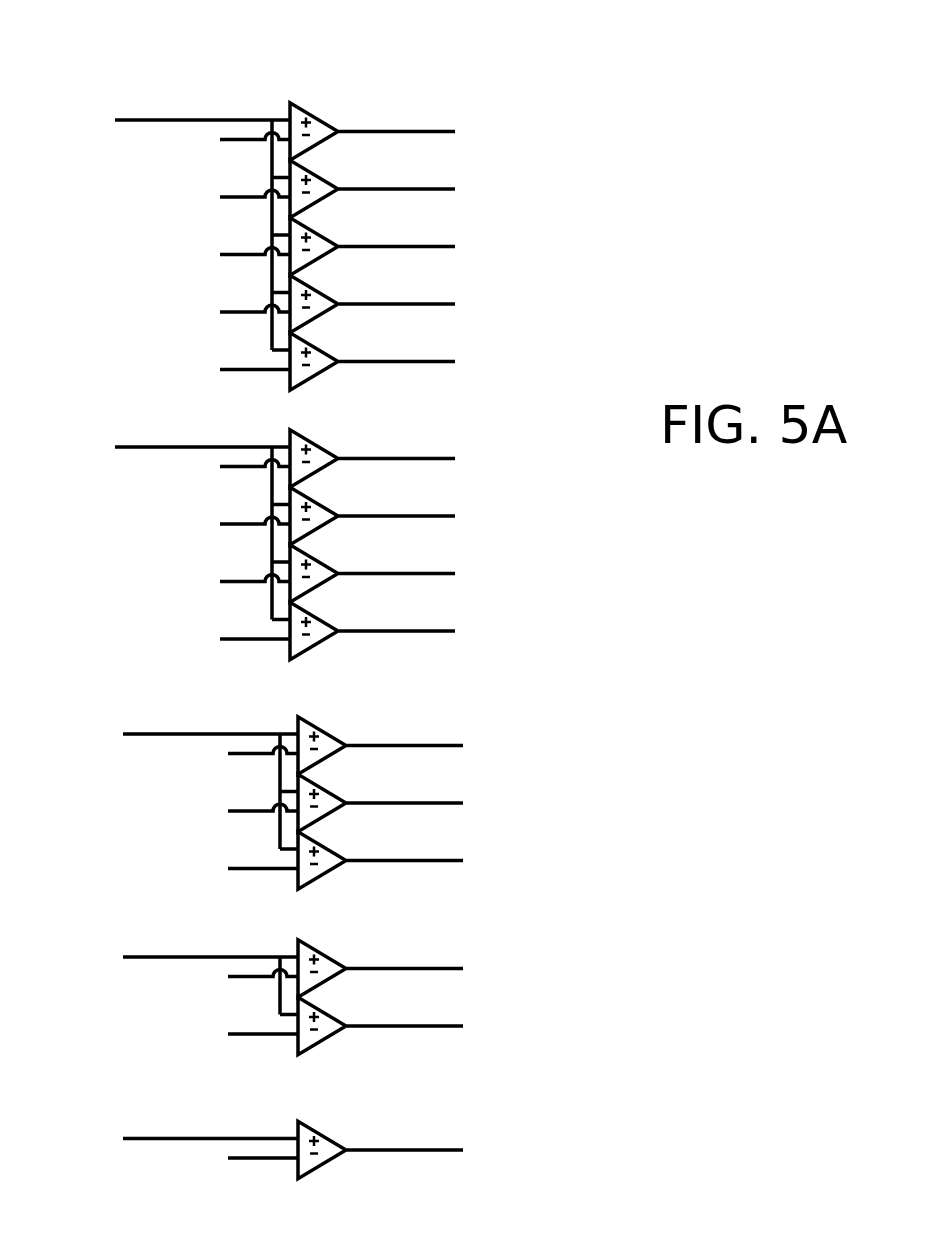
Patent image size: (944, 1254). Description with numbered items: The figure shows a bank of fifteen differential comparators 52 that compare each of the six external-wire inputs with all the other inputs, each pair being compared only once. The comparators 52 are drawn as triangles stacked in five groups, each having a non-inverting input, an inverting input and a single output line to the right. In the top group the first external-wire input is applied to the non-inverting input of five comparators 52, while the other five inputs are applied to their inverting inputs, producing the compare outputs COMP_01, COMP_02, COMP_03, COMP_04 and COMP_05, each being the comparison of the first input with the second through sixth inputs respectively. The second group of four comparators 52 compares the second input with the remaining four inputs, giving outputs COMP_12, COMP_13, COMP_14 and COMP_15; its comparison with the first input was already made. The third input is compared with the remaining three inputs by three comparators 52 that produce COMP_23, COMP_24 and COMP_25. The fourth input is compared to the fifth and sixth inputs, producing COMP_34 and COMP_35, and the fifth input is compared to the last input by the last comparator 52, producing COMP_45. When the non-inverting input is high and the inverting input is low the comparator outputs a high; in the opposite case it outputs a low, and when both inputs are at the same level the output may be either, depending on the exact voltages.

The differential comparators 52 is at (339, 106).
The compare output COMP_ 01 is at (442, 132).
The compare output COMP_ 02 is at (442, 189).
The compare output COMP_ 03 is at (442, 247).
The compare output COMP_ 04 is at (442, 304).
The compare output COMP_ 05 is at (442, 362).
The compare output COMP_ 12 is at (442, 459).
The compare output COMP_ 13 is at (442, 516).
The compare output COMP_ 14 is at (442, 574).
The compare output COMP_ 15 is at (442, 631).
The compare output COMP_ 23 is at (451, 746).
The compare output COMP_ 24 is at (451, 803).
The compare output COMP_ 25 is at (451, 861).
The compare output COMP_ 34 is at (451, 969).
The compare output COMP_ 35 is at (451, 1026).
The compare output COMP_ 45 is at (451, 1150).